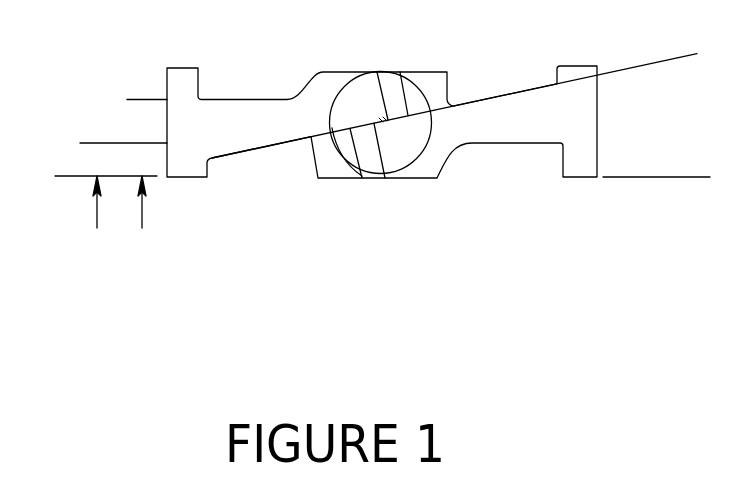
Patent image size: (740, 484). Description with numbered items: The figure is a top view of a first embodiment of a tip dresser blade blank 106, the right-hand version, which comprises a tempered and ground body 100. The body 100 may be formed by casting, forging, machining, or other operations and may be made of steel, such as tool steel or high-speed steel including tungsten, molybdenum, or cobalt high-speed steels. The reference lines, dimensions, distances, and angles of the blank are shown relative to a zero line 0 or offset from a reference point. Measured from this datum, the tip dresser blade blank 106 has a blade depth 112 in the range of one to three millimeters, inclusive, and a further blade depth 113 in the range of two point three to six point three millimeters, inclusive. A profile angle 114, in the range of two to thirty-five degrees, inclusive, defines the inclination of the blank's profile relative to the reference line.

The zero line 0 is at (98, 197).
The body 100 is at (400, 202).
The tip dresser blade blank 106 is at (350, 202).
The blade depth 112 is at (97, 143).
The blade depth 113 is at (143, 143).
The profile angle 114 is at (678, 58).